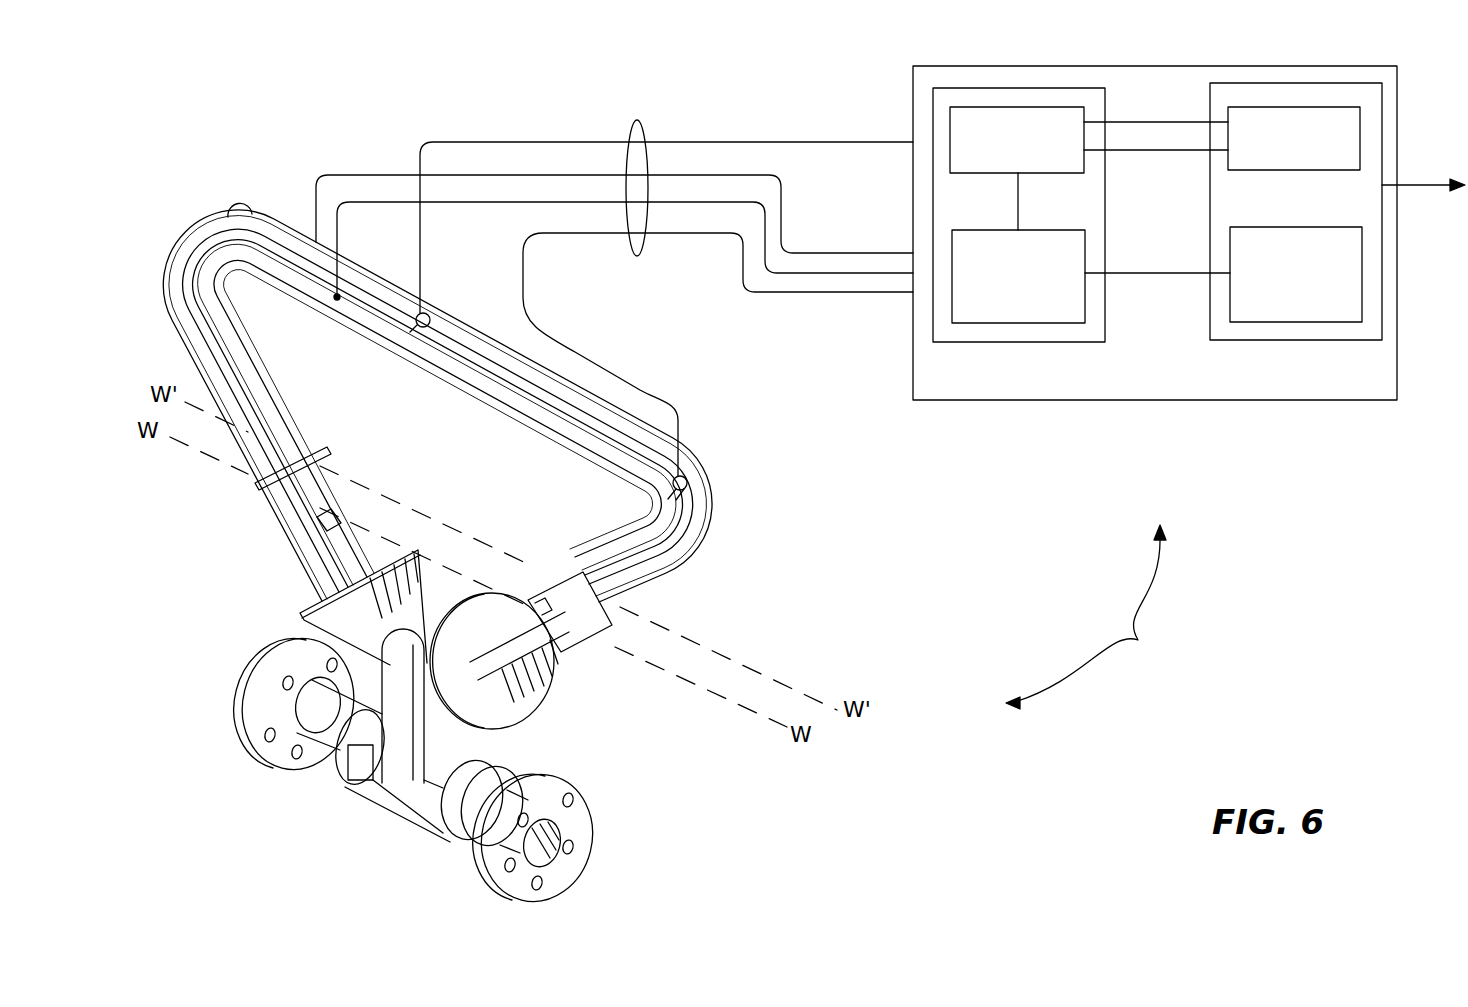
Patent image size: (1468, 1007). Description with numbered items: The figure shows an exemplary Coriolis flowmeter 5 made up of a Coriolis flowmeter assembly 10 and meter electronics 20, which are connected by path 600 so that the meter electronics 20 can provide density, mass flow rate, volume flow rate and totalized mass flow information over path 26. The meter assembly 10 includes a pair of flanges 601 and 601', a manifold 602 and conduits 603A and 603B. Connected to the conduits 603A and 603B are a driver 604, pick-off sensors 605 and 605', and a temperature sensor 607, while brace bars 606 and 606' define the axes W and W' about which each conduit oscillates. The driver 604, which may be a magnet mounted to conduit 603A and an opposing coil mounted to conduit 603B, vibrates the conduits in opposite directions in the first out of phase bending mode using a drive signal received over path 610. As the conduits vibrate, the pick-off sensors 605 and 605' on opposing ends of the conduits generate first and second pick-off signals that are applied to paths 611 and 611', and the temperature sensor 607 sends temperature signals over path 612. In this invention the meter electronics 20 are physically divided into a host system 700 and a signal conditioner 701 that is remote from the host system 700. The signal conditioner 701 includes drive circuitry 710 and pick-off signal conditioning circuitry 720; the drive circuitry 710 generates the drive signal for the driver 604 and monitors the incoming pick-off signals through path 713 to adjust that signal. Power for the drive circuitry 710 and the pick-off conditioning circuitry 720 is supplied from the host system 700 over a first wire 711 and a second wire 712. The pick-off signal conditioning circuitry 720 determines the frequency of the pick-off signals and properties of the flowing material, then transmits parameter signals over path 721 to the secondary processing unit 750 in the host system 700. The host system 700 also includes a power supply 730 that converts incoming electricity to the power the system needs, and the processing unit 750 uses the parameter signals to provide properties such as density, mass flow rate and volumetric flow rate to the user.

The Coriolis flowmeter 5 is at (1086, 617).
The Coriolis flowmeter assembly 10 is at (628, 703).
The meter electronics 20 is at (908, 98).
The path 26 is at (1423, 163).
The path 600 is at (636, 118).
The flange 601 is at (255, 704).
The flange 601' is at (569, 838).
The manifold 602 is at (403, 735).
The conduit 603A is at (373, 318).
The conduit 603B is at (512, 390).
The driver 604 is at (400, 306).
The pick-off sensor 605 is at (217, 188).
The pick-off sensor 605' is at (740, 485).
The brace bar 606 is at (259, 481).
The brace bar 606' is at (555, 596).
The temperature sensor 607 is at (334, 299).
The path 610 is at (717, 141).
The path 611 is at (718, 354).
The path 611' is at (614, 214).
The path 612 is at (820, 276).
The host system 700 is at (1308, 341).
The signal conditioner 701 is at (1032, 343).
The drive circuitry 710 is at (992, 175).
The first wire 711 is at (1160, 120).
The second wire 712 is at (1157, 152).
The path 713 is at (1019, 188).
The pick-off signal conditioning circuitry 720 is at (1086, 238).
The path 721 is at (1157, 276).
The power supply 730 is at (1287, 172).
The secondary processing unit 750 is at (1300, 227).